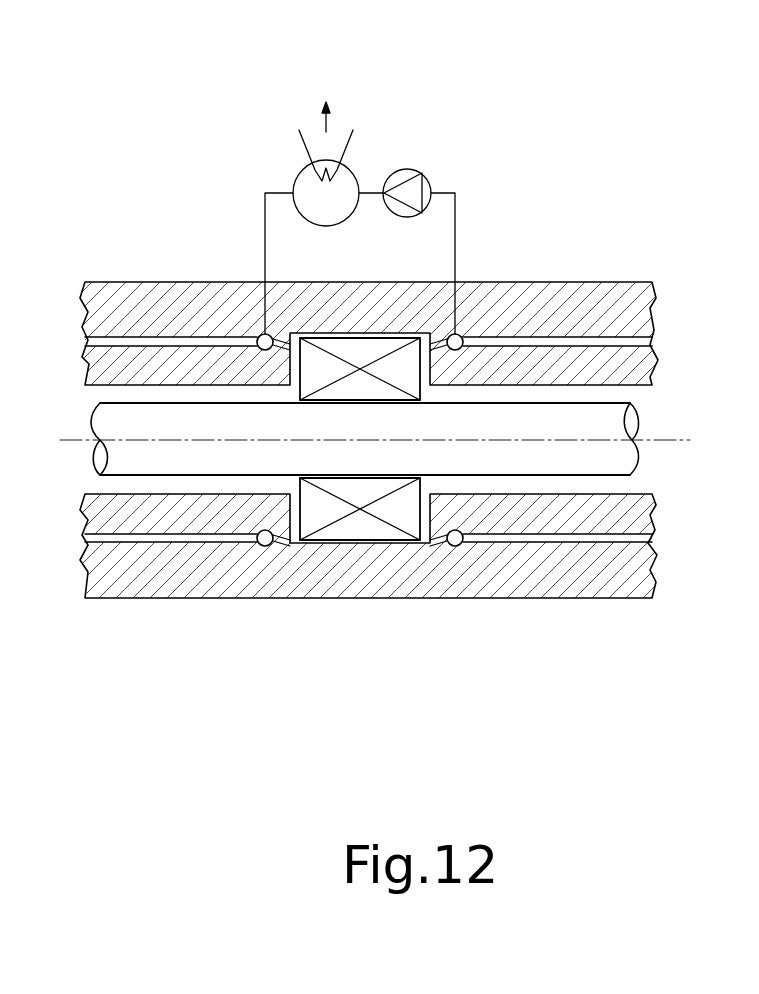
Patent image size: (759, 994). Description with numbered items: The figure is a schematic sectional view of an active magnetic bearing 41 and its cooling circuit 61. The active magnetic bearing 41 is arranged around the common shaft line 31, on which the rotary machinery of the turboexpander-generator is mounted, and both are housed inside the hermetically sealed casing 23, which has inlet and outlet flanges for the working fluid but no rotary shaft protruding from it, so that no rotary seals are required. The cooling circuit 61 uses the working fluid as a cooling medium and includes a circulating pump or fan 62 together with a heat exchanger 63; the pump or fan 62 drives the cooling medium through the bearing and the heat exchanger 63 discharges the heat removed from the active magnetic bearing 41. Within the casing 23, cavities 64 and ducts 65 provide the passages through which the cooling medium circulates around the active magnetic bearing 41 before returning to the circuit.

The hermetically sealed casing 23 is at (588, 587).
The common shaft line 31 is at (610, 418).
The active magnetic bearing 41 is at (390, 533).
The cooling circuit 61 is at (517, 167).
The circulating pump or fan 62 is at (428, 180).
The heat exchanger 63 is at (340, 227).
The cavities 64 is at (282, 533).
The ducts 65 is at (613, 538).